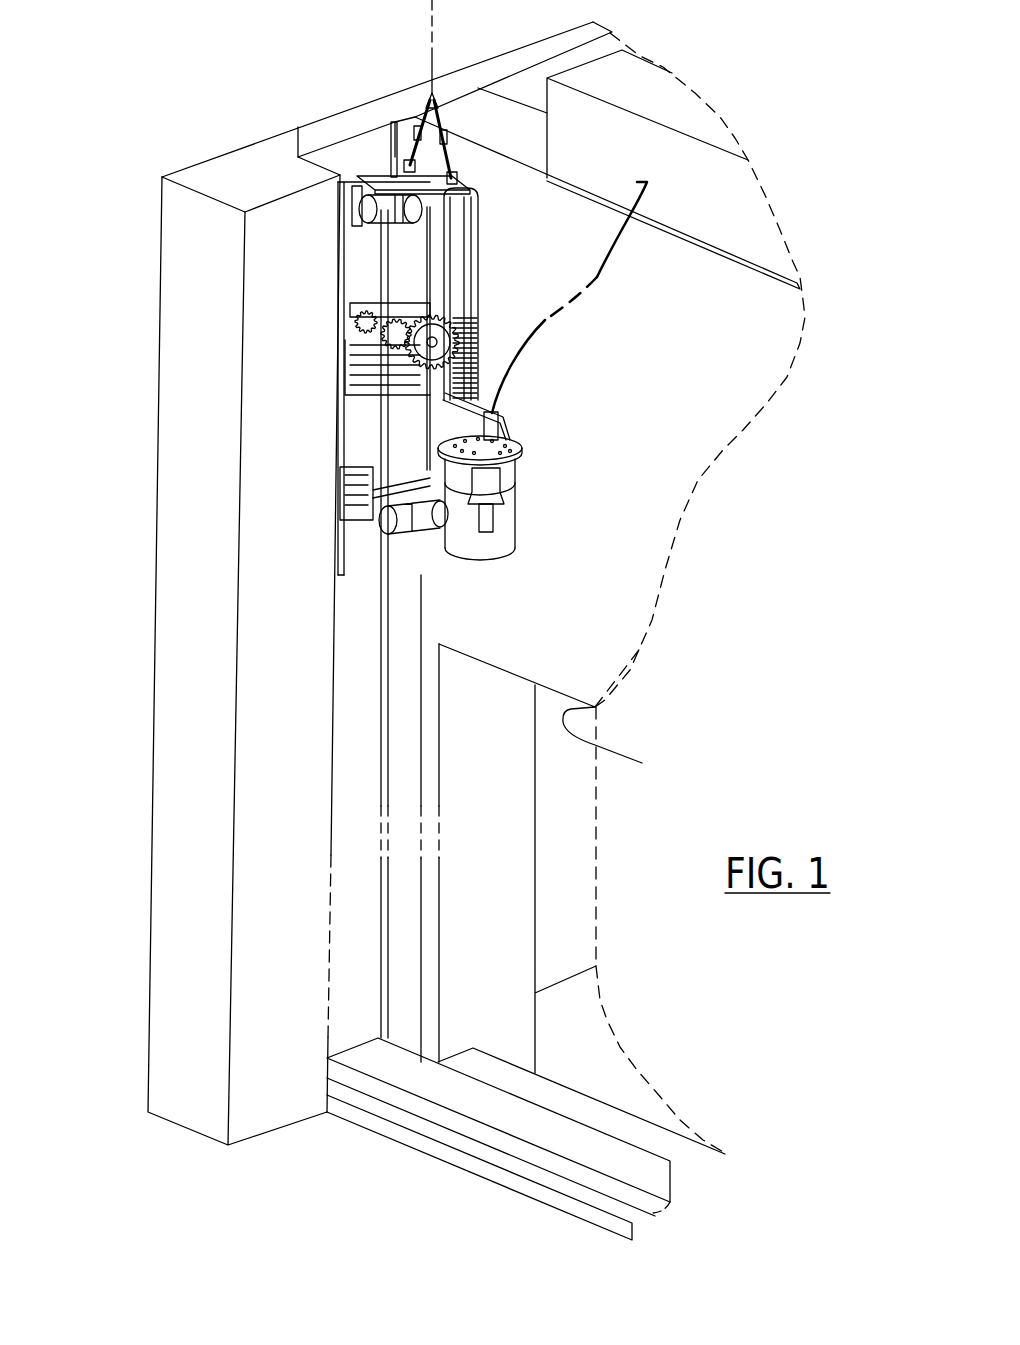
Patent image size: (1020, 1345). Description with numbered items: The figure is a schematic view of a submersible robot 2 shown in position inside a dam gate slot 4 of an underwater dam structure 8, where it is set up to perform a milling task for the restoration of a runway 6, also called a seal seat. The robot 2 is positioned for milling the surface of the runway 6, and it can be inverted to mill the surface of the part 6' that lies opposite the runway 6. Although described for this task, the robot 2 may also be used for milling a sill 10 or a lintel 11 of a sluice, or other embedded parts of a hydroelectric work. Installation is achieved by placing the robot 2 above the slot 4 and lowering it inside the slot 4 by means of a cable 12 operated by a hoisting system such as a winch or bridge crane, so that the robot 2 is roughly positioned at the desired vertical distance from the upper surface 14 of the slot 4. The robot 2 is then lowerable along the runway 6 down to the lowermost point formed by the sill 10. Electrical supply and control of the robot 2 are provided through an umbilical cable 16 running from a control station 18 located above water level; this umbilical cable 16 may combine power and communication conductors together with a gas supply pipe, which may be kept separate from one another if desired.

The submersible robot 2 is at (545, 490).
The dam gate slot 4 is at (363, 142).
The runway 6 is at (413, 105).
The part opposite to the runway 6' is at (270, 146).
The underwater dam structure 8 is at (141, 466).
The sill 10 is at (447, 1115).
The lintel 11 is at (601, 746).
The cable 12 is at (437, 58).
The upper surface of the slot 14 is at (312, 135).
The umbilical cable 16 is at (598, 270).
The control station 18 is at (639, 68).